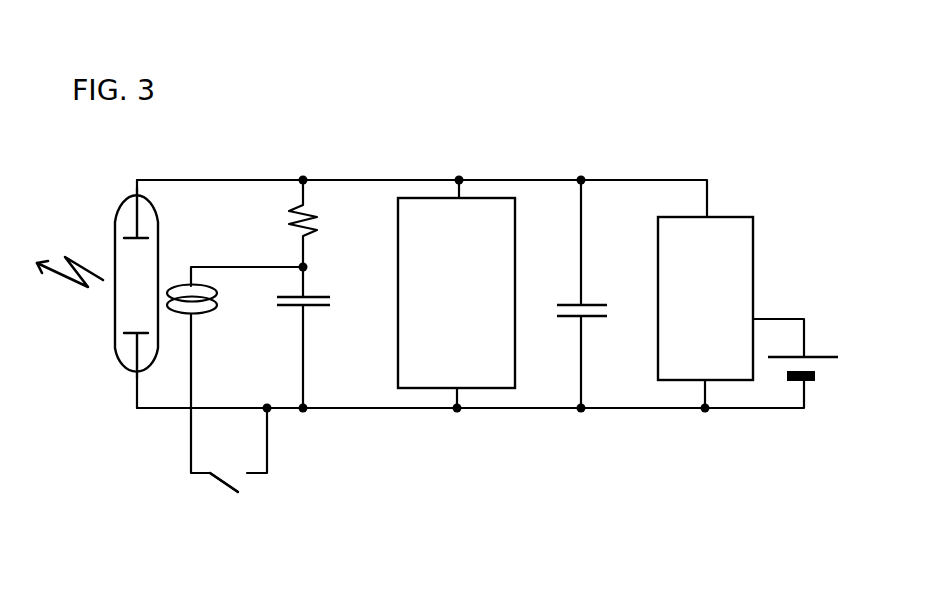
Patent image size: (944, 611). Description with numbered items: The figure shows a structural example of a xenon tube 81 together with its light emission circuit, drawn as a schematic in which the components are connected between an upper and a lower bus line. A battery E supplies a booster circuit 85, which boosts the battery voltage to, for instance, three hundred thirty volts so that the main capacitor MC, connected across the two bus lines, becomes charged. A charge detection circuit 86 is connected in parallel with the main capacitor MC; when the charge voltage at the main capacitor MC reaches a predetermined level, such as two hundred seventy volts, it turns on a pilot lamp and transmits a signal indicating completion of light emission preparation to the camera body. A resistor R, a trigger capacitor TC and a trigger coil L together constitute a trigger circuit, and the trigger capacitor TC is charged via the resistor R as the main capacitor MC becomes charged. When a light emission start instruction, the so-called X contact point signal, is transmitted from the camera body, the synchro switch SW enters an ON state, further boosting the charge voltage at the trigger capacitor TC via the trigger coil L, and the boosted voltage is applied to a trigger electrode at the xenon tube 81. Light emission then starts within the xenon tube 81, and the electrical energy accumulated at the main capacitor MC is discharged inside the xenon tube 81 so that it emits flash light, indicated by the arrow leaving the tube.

The xenon tube 81 is at (110, 210).
The booster circuit 85 is at (658, 278).
The charge detection circuit 86 is at (398, 357).
The resistor R is at (318, 219).
The trigger capacitor TC is at (321, 300).
The trigger coil L is at (205, 301).
The synchro switch SW is at (219, 468).
The main capacitor MC is at (570, 297).
The battery E is at (814, 369).